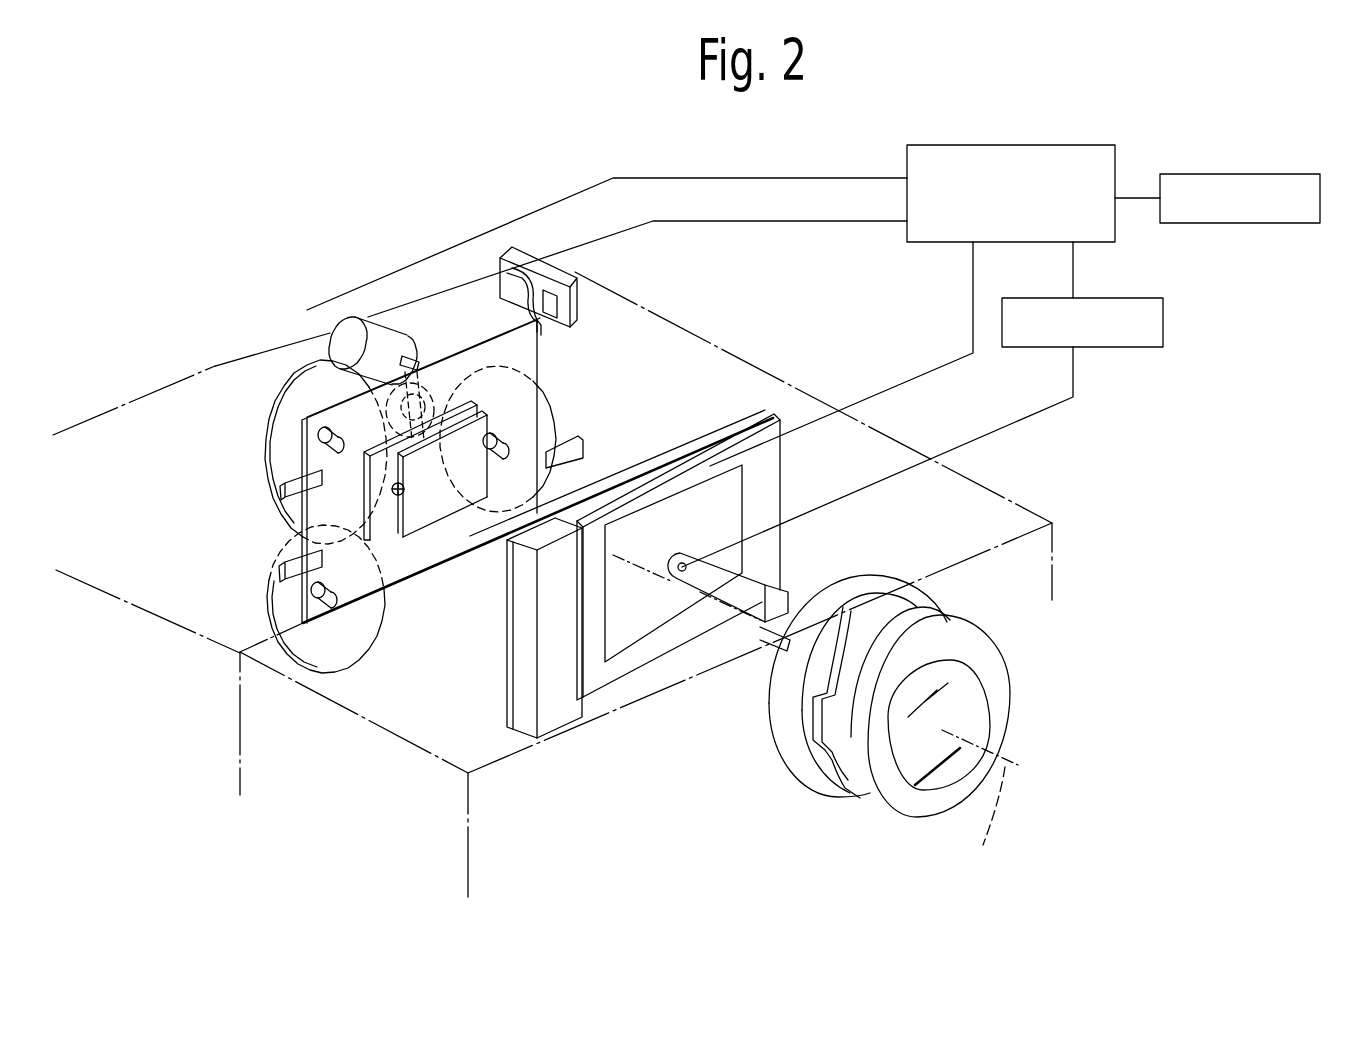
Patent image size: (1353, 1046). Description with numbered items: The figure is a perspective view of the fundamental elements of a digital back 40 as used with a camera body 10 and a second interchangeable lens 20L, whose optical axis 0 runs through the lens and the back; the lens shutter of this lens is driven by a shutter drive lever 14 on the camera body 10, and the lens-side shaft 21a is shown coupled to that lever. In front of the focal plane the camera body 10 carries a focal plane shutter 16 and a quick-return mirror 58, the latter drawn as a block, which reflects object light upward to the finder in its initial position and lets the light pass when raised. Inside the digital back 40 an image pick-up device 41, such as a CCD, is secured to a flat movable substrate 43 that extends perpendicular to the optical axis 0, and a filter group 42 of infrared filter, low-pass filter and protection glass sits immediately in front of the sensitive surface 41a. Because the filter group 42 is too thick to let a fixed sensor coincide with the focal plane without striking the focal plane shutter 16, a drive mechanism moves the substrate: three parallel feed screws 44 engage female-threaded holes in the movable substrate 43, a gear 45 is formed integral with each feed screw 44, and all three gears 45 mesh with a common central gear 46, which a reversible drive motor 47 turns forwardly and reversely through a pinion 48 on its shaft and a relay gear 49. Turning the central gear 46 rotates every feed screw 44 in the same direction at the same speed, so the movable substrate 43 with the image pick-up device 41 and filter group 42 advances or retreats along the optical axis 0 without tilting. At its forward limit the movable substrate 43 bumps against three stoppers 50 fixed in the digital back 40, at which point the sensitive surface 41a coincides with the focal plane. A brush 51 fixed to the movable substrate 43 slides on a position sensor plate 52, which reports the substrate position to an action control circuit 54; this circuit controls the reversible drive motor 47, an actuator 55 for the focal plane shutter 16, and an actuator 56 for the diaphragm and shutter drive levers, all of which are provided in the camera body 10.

The optical axis 0 is at (990, 823).
The camera body 10 is at (970, 516).
The shutter drive lever 14 is at (717, 600).
The focal plane shutter 16 is at (790, 477).
The second interchangeable lens 20L is at (1010, 723).
The lens drive shaft 21a is at (770, 637).
The digital back 40 is at (673, 348).
The image pick-up device 41 is at (372, 548).
The sensitive surface 41a is at (425, 575).
The filter group 42 is at (420, 550).
The movable substrate 43 is at (540, 368).
The feed screw 44 is at (317, 450).
The gear 45 is at (283, 412).
The central gear 46 is at (430, 535).
The reversible drive motor 47 is at (392, 330).
The pinion 48 is at (433, 357).
The relay gear 49 is at (455, 353).
The stopper 50 is at (282, 507).
The brush 51 is at (500, 289).
The position sensor plate 52 is at (570, 312).
The action control circuit 54 is at (1117, 146).
The actuator 55 is at (557, 727).
The actuator 56 is at (1161, 302).
The quick-return mirror 58 is at (1318, 178).